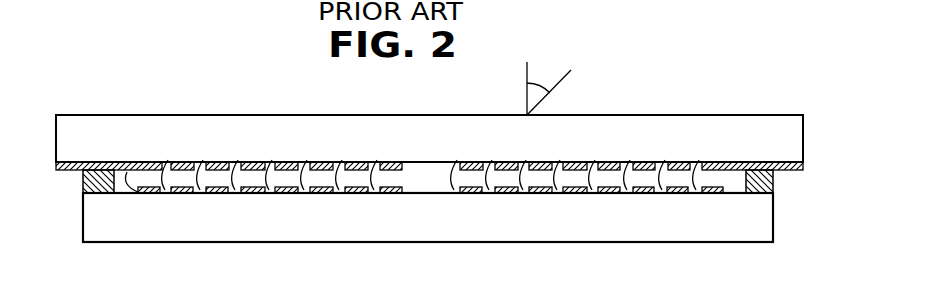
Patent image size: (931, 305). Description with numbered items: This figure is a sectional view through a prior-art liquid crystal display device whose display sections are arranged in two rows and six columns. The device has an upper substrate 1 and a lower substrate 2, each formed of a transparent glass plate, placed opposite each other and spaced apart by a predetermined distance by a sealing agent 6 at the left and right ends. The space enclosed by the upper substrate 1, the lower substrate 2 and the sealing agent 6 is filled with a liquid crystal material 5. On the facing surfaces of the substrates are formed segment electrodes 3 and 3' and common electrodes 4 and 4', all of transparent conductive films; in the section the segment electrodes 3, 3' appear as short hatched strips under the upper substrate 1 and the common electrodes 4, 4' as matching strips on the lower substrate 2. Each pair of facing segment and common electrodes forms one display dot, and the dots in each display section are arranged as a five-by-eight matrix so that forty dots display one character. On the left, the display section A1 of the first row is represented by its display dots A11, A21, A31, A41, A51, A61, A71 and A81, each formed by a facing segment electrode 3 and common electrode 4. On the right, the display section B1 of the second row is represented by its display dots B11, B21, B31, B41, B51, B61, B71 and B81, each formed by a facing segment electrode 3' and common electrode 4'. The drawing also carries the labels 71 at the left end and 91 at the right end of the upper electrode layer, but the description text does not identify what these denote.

The upper substrate 1 is at (365, 160).
The lower substrate 2 is at (378, 232).
The segment electrode 3 is at (109, 126).
The segment electrode 3' is at (467, 136).
The common electrode 4 is at (270, 209).
The common electrode 4' is at (591, 210).
The liquid crystal material 5 is at (418, 182).
The sealing agent 6 is at (83, 187).
The lead terminal 71 is at (72, 172).
The lead terminal 91 is at (795, 172).
The display section A1 is at (250, 113).
The display section B1 is at (631, 113).
The display dot A11 is at (132, 161).
The display dot A21 is at (171, 162).
The display dot A31 is at (211, 162).
The display dot A41 is at (250, 162).
The display dot A51 is at (286, 162).
The display dot A61 is at (321, 162).
The display dot A71 is at (356, 162).
The display dot A81 is at (391, 162).
The display dot B11 is at (453, 162).
The display dot B21 is at (498, 162).
The display dot B31 is at (535, 162).
The display dot B41 is at (568, 162).
The display dot B51 is at (601, 162).
The display dot B61 is at (638, 162).
The display dot B71 is at (673, 162).
The display dot B81 is at (715, 162).